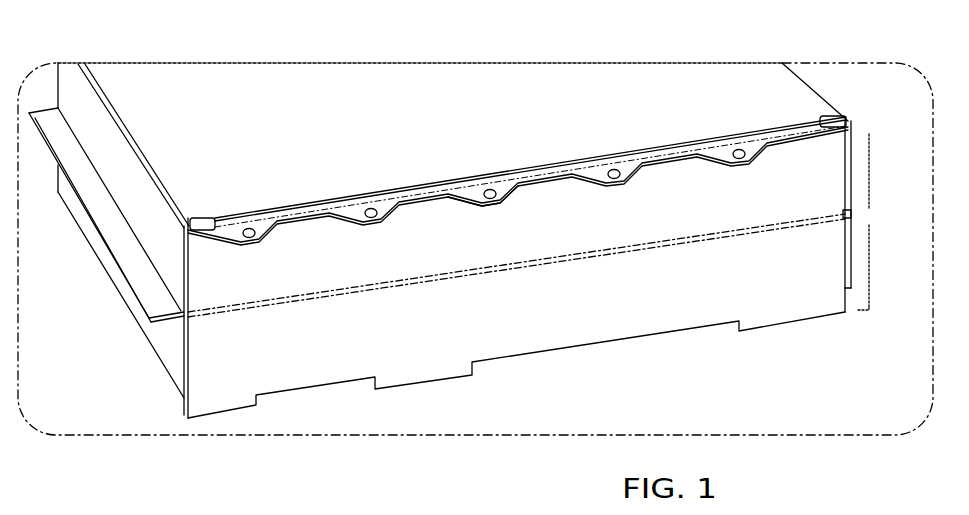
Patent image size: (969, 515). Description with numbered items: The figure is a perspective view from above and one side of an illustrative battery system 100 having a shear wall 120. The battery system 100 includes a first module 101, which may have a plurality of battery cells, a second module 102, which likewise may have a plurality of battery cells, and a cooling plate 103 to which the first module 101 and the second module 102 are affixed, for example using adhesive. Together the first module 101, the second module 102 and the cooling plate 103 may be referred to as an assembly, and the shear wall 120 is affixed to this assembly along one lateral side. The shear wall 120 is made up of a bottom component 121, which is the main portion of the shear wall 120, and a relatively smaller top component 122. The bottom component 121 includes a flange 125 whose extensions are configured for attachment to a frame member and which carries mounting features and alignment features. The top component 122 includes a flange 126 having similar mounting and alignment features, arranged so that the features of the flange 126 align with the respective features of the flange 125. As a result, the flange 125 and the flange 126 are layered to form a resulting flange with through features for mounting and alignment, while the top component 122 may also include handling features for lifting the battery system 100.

The battery system 100 is at (300, 42).
The first module 101 is at (74, 88).
The second module 102 is at (160, 330).
The cooling plate 103 is at (87, 200).
The shear wall 120 is at (548, 262).
The bottom component 121 is at (867, 212).
The top component 122 is at (863, 120).
The flange 125 is at (485, 212).
The flange 126 is at (478, 184).